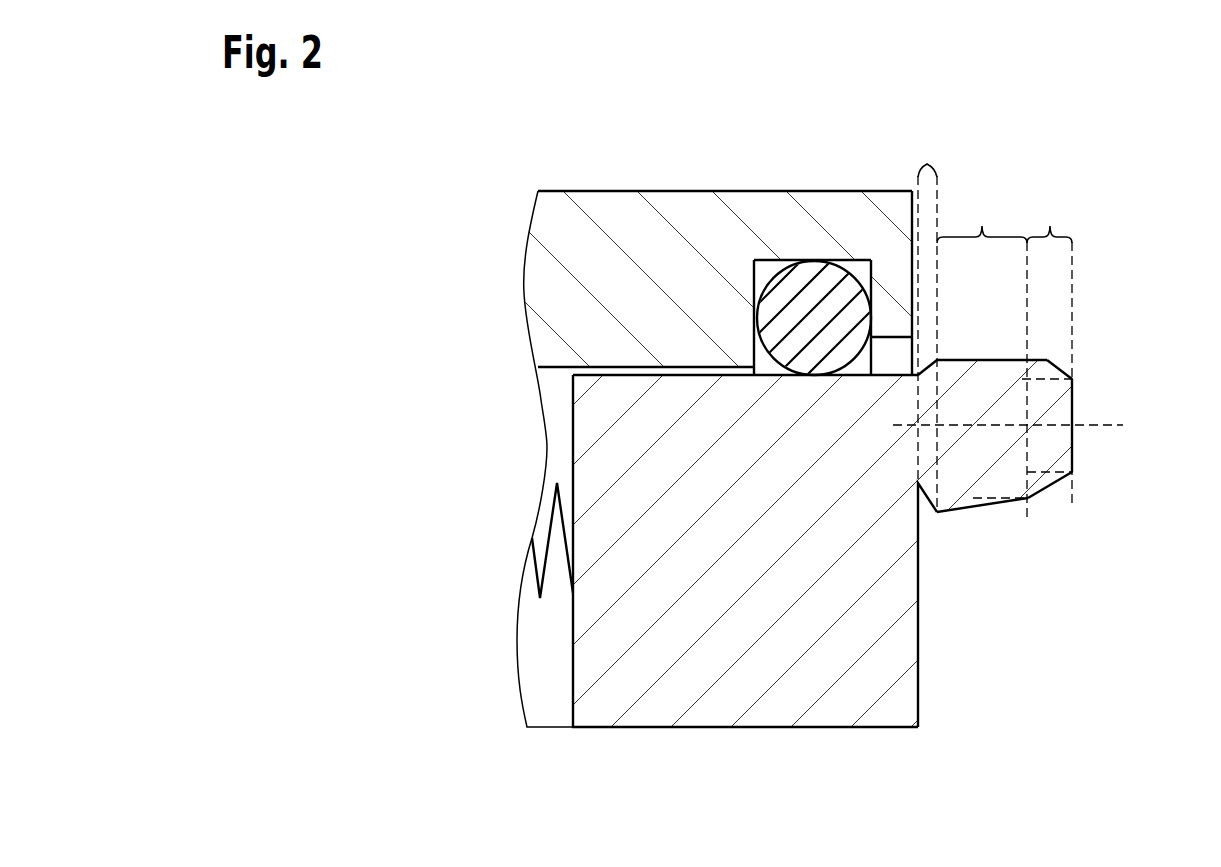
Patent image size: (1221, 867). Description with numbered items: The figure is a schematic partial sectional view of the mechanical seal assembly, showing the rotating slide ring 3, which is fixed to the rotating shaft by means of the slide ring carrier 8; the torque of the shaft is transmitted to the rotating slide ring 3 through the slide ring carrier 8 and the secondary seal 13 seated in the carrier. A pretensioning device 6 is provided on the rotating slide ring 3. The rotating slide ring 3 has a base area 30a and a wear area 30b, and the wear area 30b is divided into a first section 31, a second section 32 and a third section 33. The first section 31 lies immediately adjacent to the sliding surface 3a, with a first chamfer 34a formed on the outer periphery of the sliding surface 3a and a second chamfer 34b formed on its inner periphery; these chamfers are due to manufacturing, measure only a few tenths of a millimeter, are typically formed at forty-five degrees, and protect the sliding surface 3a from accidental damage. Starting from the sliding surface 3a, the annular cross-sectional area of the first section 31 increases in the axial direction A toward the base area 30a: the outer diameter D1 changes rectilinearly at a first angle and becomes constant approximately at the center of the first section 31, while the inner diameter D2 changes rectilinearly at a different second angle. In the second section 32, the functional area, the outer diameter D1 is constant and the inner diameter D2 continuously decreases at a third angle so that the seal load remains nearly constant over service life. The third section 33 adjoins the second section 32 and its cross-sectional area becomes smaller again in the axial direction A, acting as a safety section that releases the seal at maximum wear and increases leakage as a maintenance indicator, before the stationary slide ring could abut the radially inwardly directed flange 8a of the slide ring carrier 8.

The rotating slide ring 3 is at (699, 557).
The sliding surface 3a is at (1082, 399).
The pretensioning device 6 is at (551, 517).
The slide ring carrier 8 is at (685, 222).
The radially inwardly directed flange 8a is at (887, 312).
The secondary seal 13 is at (807, 307).
The base area 30a is at (803, 695).
The wear area 30b is at (1037, 433).
The first section 31 is at (1049, 347).
The second section 32 is at (982, 353).
The third section 33 is at (930, 320).
The first chamfer 34a is at (1073, 379).
The second chamfer 34b is at (1073, 473).
The outer diameter D1 is at (988, 350).
The inner diameter D2 is at (972, 518).
The axial direction A is at (1150, 298).